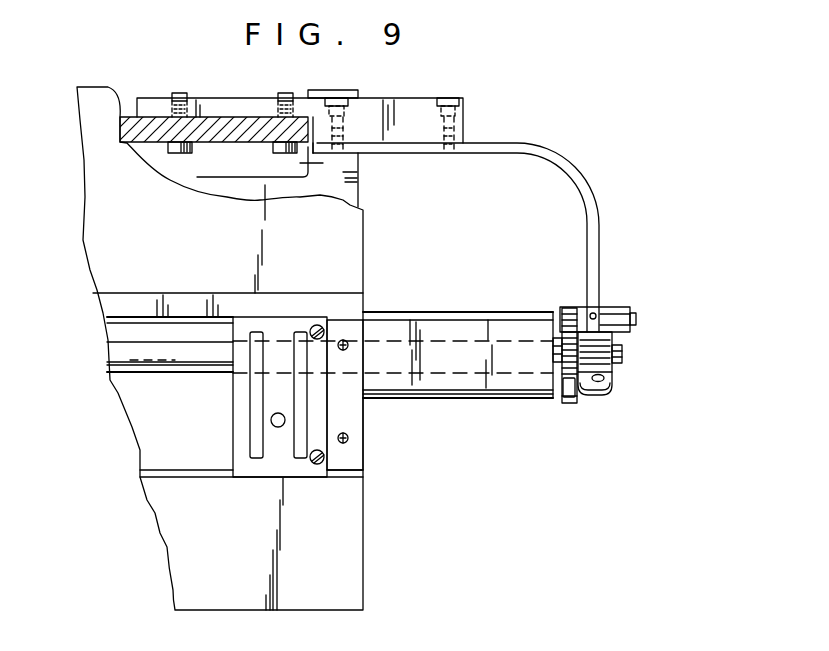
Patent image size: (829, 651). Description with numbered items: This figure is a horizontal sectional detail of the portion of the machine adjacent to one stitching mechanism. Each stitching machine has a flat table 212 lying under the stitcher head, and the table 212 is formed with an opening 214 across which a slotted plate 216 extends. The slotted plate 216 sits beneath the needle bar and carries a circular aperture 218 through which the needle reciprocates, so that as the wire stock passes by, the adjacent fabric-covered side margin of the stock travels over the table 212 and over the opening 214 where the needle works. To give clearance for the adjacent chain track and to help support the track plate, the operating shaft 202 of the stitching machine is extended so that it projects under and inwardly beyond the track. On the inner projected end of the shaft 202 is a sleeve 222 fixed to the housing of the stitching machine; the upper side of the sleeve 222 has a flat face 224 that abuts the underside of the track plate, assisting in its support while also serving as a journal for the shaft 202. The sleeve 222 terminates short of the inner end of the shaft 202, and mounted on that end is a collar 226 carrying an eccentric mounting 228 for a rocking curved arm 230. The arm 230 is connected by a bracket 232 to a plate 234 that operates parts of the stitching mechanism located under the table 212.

The rotating shaft 202 is at (455, 340).
The flat table 212 is at (358, 270).
The opening 214 is at (160, 470).
The slotted plate 216 is at (243, 387).
The circular aperture 218 is at (271, 422).
The sleeve 222 is at (440, 400).
The flat face 224 is at (517, 378).
The collar 226 is at (568, 407).
The eccentric mounting 228 is at (622, 358).
The rocking curved arm 230 is at (594, 213).
The bracket 232 is at (422, 107).
The plate 234 is at (229, 122).